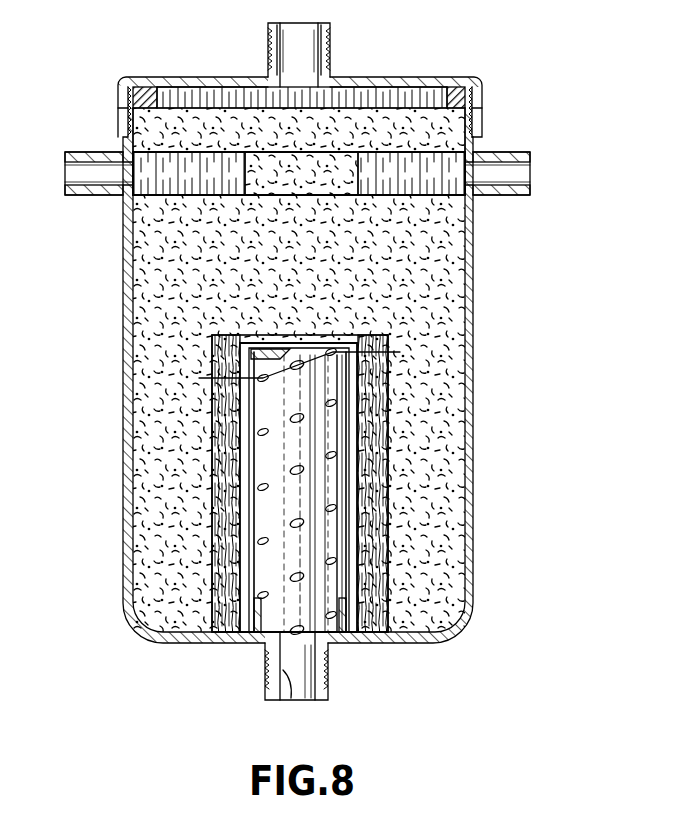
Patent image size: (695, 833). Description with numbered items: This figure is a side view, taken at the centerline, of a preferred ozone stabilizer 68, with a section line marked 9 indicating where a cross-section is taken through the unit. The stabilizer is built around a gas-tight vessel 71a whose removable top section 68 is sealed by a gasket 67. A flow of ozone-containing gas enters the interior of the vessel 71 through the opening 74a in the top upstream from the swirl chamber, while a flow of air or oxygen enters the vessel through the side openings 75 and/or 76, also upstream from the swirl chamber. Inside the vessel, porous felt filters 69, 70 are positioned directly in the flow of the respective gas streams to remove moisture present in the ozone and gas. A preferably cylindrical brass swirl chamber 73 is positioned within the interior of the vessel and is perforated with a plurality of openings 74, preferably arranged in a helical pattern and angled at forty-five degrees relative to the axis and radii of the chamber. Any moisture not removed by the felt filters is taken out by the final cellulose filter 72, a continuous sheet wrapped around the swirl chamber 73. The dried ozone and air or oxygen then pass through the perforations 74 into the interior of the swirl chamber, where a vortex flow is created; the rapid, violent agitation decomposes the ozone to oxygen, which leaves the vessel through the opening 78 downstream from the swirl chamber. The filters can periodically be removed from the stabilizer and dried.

The gasket 67 is at (118, 90).
The removable top section 68 is at (183, 52).
The felt filter 69 is at (350, 118).
The felt filter 70 is at (262, 158).
The interior of the vessel 71 is at (312, 263).
The gas-tight vessel 71a is at (446, 250).
The cellulose filter 72 is at (213, 420).
The swirl chamber 73 is at (250, 507).
The perforations 74 is at (304, 576).
The ozone inlet opening 74a is at (311, 37).
The gas inlet opening 75 is at (65, 172).
The gas inlet opening 76 is at (530, 173).
The outlet opening 78 is at (292, 700).
The section line 9 is at (296, 336).